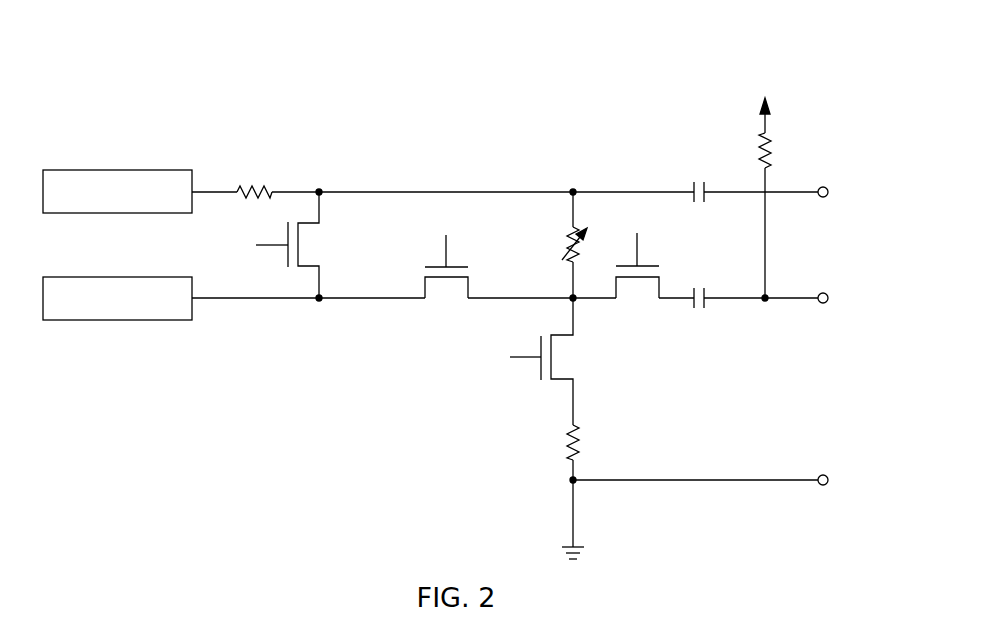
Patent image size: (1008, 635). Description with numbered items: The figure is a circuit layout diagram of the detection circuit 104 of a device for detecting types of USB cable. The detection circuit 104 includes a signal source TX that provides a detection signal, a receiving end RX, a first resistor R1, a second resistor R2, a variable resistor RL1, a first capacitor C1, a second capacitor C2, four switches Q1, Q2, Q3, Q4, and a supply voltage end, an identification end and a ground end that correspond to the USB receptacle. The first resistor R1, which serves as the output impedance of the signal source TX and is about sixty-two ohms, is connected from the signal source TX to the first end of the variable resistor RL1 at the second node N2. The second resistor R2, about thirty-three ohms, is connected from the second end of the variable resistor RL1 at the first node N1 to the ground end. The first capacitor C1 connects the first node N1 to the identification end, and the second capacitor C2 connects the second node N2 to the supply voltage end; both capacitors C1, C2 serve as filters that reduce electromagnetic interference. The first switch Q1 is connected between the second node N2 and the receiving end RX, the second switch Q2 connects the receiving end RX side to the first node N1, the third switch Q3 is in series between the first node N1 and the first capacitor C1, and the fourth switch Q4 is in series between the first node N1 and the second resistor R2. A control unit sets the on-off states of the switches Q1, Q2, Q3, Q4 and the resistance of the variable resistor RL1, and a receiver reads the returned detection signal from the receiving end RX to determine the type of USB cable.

The detection circuit 104 is at (175, 97).
The first resistor R1 is at (254, 176).
The second resistor R2 is at (593, 442).
The first capacitor C1 is at (699, 283).
The second capacitor C2 is at (699, 176).
The first switch Q1 is at (307, 245).
The second switch Q2 is at (446, 283).
The third switch Q3 is at (637, 282).
The fourth switch Q4 is at (561, 361).
The variable resistor RL1 is at (549, 245).
The first node N1 is at (553, 313).
The second node N2 is at (322, 174).